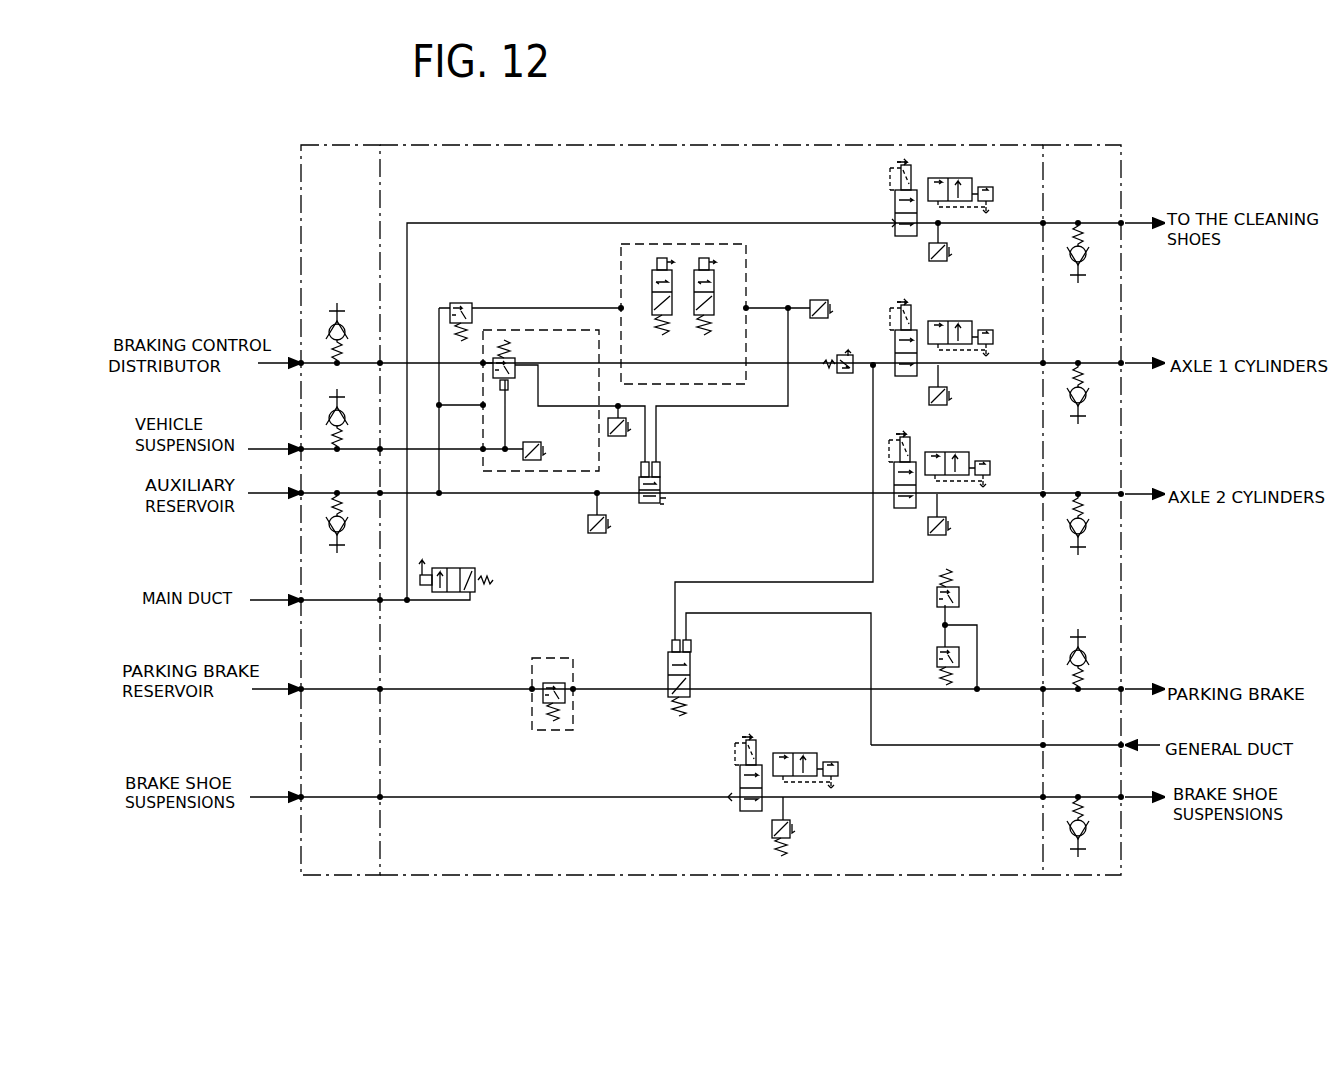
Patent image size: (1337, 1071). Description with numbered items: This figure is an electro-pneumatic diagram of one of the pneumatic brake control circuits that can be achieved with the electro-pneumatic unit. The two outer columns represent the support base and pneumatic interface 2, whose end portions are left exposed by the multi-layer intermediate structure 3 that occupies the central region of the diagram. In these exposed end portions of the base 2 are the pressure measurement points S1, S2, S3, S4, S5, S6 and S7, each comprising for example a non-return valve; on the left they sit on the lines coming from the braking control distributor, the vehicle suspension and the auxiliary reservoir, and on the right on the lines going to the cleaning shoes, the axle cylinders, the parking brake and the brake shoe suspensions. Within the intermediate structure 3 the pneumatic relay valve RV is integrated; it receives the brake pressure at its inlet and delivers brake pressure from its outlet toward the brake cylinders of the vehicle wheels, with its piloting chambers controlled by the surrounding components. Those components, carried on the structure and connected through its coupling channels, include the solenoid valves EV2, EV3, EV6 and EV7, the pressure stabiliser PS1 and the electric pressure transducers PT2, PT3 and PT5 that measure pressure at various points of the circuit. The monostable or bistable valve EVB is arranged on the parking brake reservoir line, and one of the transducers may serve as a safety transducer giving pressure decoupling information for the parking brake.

The support base and pneumatic interface 2 is at (333, 160).
The multi-layer intermediate structure 3 is at (628, 163).
The pressure measurement point S1 is at (336, 302).
The pressure measurement point S2 is at (339, 394).
The pressure measurement point S3 is at (338, 551).
The pressure measurement point S4 is at (1080, 286).
The pressure measurement point S5 is at (1080, 428).
The pressure measurement point S6 is at (1078, 565).
The pressure measurement point S7 is at (1083, 627).
The solenoid valve EV2 is at (906, 509).
The solenoid valve EV3 is at (888, 338).
The solenoid valve EV6 is at (953, 455).
The solenoid valve EV7 is at (958, 329).
The monostable or bistable valve EVB is at (697, 666).
The pressure stabiliser PS1 is at (840, 375).
The electric pressure transducer PT2 is at (948, 526).
The electric pressure transducer PT3 is at (948, 396).
The electric pressure transducer PT5 is at (595, 536).
The pneumatic relay valve RV is at (668, 481).